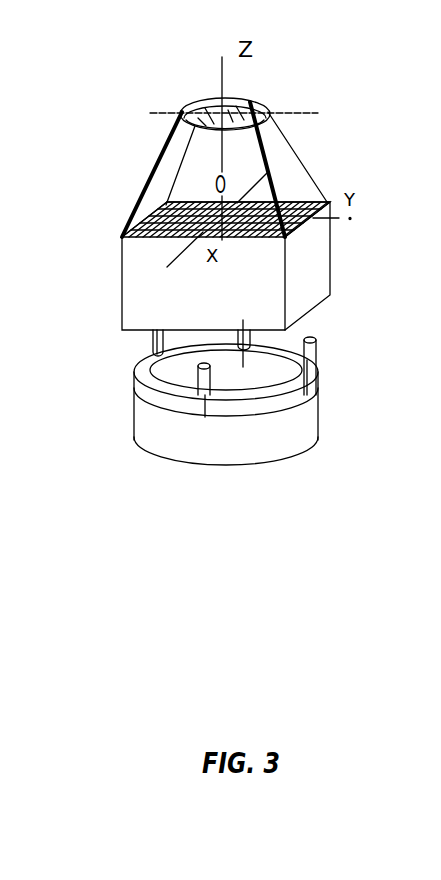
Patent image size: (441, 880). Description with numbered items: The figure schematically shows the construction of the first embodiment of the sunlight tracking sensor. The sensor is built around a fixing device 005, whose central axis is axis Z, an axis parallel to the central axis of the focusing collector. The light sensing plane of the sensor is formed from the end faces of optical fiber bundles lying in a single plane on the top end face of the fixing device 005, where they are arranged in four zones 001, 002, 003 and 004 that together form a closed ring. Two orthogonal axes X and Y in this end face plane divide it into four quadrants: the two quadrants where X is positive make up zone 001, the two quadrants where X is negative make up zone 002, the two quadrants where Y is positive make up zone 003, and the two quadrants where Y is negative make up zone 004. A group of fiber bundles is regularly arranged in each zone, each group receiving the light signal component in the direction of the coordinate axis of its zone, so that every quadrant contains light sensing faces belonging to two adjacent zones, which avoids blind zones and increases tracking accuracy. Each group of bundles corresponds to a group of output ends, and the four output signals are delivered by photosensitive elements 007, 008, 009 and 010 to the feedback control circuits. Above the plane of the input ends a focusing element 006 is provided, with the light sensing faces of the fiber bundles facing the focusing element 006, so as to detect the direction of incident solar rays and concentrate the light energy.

The zone 001 is at (122, 252).
The zone 002 is at (241, 212).
The zone 003 is at (328, 203).
The zone 004 is at (157, 212).
The fixing device 005 is at (303, 267).
The focusing element 006 is at (253, 98).
The photosensitive element 007 is at (196, 382).
The photosensitive element 008 is at (255, 332).
The photosensitive element 009 is at (314, 347).
The photosensitive element 010 is at (153, 345).